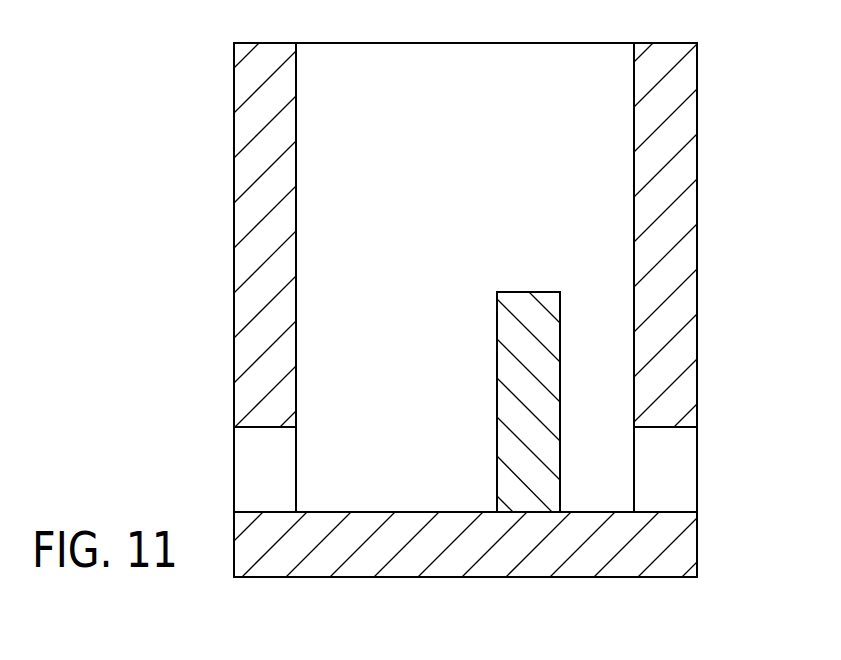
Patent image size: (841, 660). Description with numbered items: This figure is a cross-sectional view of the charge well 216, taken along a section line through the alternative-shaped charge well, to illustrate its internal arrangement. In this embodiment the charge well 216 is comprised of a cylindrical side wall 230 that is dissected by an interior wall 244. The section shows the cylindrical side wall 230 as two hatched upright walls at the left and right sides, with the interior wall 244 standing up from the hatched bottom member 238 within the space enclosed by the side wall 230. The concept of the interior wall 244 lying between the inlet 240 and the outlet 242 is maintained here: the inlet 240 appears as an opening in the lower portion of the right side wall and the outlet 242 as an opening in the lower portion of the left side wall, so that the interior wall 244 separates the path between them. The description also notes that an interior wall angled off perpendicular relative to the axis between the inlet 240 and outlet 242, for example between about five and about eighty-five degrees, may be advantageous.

The charge well 216 is at (447, 171).
The cylindrical side wall 230 is at (683, 167).
The bottom plate 238 is at (622, 558).
The inlet 240 is at (683, 468).
The outlet 242 is at (247, 470).
The interior wall 244 is at (525, 292).